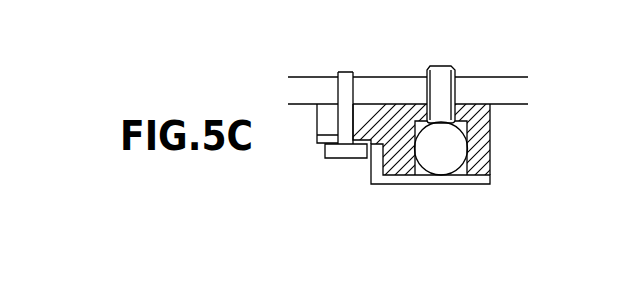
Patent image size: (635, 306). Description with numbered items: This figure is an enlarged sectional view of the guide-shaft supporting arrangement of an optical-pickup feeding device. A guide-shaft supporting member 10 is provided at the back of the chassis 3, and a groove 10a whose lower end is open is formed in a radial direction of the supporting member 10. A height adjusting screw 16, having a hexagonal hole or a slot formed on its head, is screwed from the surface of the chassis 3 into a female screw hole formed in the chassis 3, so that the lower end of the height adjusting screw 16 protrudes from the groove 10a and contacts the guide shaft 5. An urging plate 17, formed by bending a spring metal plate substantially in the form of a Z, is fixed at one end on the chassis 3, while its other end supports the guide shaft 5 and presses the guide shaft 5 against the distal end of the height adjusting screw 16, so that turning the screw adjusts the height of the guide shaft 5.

The chassis 3 is at (498, 87).
The guide shaft 5 is at (452, 150).
The guide-shaft supporting member 10 is at (392, 156).
The groove 10a is at (465, 124).
The height adjusting screw 16 is at (443, 64).
The urging plate 17 is at (458, 184).